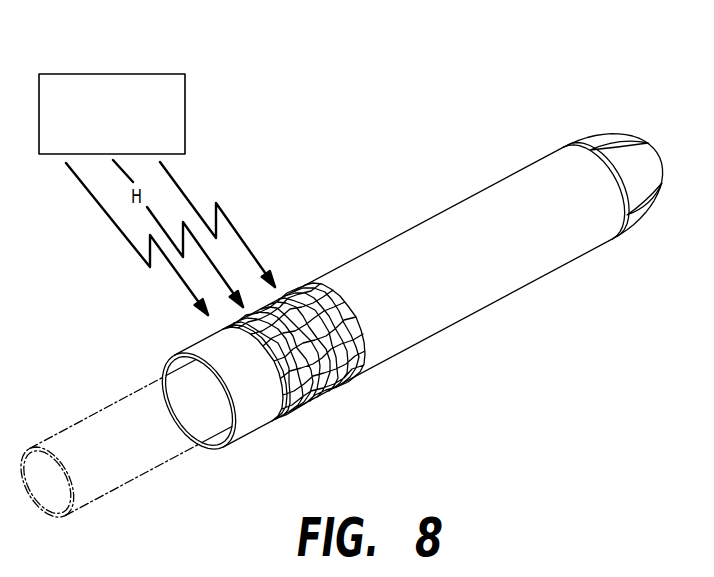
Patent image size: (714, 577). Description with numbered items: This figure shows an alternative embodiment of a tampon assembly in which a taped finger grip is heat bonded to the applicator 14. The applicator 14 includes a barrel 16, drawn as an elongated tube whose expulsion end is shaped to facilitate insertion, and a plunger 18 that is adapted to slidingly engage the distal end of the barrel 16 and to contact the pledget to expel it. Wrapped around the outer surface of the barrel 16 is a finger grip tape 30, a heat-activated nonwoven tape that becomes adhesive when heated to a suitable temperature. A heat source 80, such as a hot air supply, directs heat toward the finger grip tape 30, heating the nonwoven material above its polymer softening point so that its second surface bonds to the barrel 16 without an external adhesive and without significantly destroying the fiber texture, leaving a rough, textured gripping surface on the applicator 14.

The heat source 80 is at (70, 74).
The barrel 16 is at (397, 222).
The applicator 14 is at (573, 113).
The plunger 18 is at (85, 418).
The finger grip tape 30 is at (312, 422).